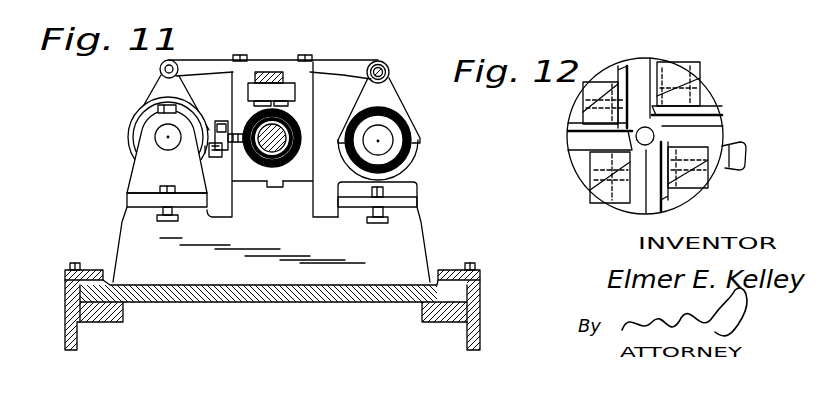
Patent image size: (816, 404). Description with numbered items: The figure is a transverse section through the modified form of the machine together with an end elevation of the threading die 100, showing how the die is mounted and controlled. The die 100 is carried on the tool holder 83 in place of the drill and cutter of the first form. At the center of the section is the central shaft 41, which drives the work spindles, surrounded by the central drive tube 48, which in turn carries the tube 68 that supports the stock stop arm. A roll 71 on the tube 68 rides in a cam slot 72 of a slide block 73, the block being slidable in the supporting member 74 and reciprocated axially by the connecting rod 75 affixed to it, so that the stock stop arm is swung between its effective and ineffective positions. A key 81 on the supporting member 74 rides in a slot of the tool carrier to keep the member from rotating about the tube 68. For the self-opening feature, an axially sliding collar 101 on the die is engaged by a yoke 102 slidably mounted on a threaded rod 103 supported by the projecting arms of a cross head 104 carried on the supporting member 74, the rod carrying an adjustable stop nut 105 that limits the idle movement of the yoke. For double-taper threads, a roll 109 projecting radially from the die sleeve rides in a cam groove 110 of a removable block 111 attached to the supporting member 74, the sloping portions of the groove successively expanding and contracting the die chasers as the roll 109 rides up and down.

In FIG. 11, the central shaft 41 is at (260, 158).
In FIG. 11, the central drive tube 48 is at (294, 148).
In FIG. 11, the tube 68 is at (283, 168).
In FIG. 11, the roll 71 is at (247, 104).
In FIG. 11, the cam slot 72 is at (294, 102).
In FIG. 11, the slide block 73 is at (250, 83).
In FIG. 11, the supporting member 74 is at (305, 115).
In FIG. 11, the connecting rod 75 is at (278, 72).
In FIG. 11, the key 81 is at (272, 187).
In FIG. 11, the tool holder 83 is at (132, 176).
In FIG. 11, the threading die 100 is at (123, 148).
In FIG. 12, the threading die 100 is at (699, 71).
In FIG. 11, the axially sliding collar 101 is at (421, 145).
In FIG. 11, the yoke 102 is at (148, 96).
In FIG. 11, the threaded rod 103 is at (173, 63).
In FIG. 11, the cross head 104 is at (214, 60).
In FIG. 11, the stop nut 105 is at (390, 66).
In FIG. 11, the roll 109 is at (205, 150).
In FIG. 12, the roll 109 is at (741, 142).
In FIG. 11, the cam groove 110 is at (223, 157).
In FIG. 11, the block 111 is at (231, 125).